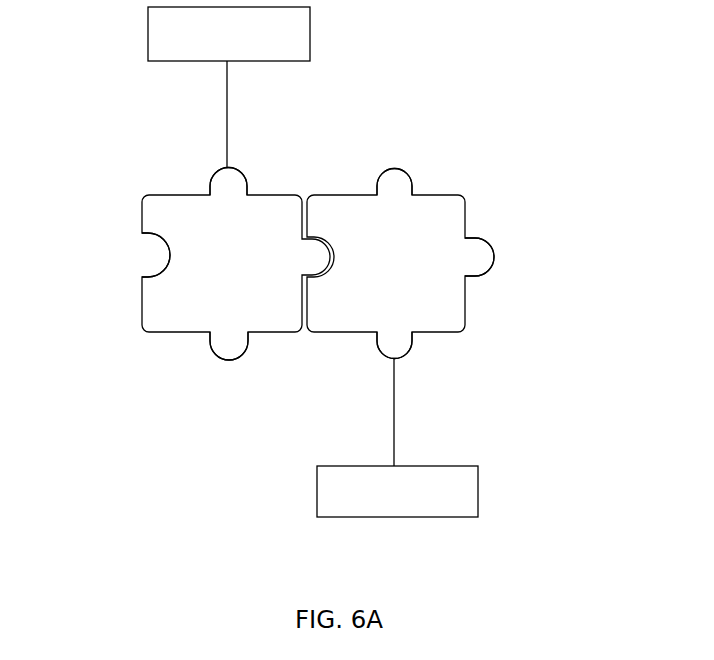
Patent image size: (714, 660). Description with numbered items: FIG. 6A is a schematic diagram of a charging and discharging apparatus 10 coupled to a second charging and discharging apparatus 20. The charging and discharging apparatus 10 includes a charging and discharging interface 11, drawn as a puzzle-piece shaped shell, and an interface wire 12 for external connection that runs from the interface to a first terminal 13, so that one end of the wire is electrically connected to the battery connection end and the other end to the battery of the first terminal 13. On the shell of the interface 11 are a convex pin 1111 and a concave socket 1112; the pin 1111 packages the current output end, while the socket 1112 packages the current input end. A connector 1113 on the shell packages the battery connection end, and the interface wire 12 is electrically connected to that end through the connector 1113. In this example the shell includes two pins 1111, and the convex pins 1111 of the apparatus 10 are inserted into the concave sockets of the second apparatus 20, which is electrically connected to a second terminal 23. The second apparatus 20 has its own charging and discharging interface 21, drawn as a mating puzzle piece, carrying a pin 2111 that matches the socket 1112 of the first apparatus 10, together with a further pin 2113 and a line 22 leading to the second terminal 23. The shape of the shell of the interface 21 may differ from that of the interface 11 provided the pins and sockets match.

The charging and discharging apparatus 10 is at (129, 102).
The charging and discharging interface 11 is at (182, 312).
The pin 1111 is at (248, 343).
The socket 1112 is at (168, 260).
The connector 1113 is at (243, 173).
The interface wire 12 is at (227, 116).
The first terminal 13 is at (255, 61).
The second charging and discharging apparatus 20 is at (630, 208).
The charging and discharging interface 21 is at (423, 213).
The pin 2111 is at (409, 172).
The bottom protrusion of second body 2113 is at (413, 343).
The second connection line 22 is at (395, 383).
The second terminal 23 is at (317, 508).